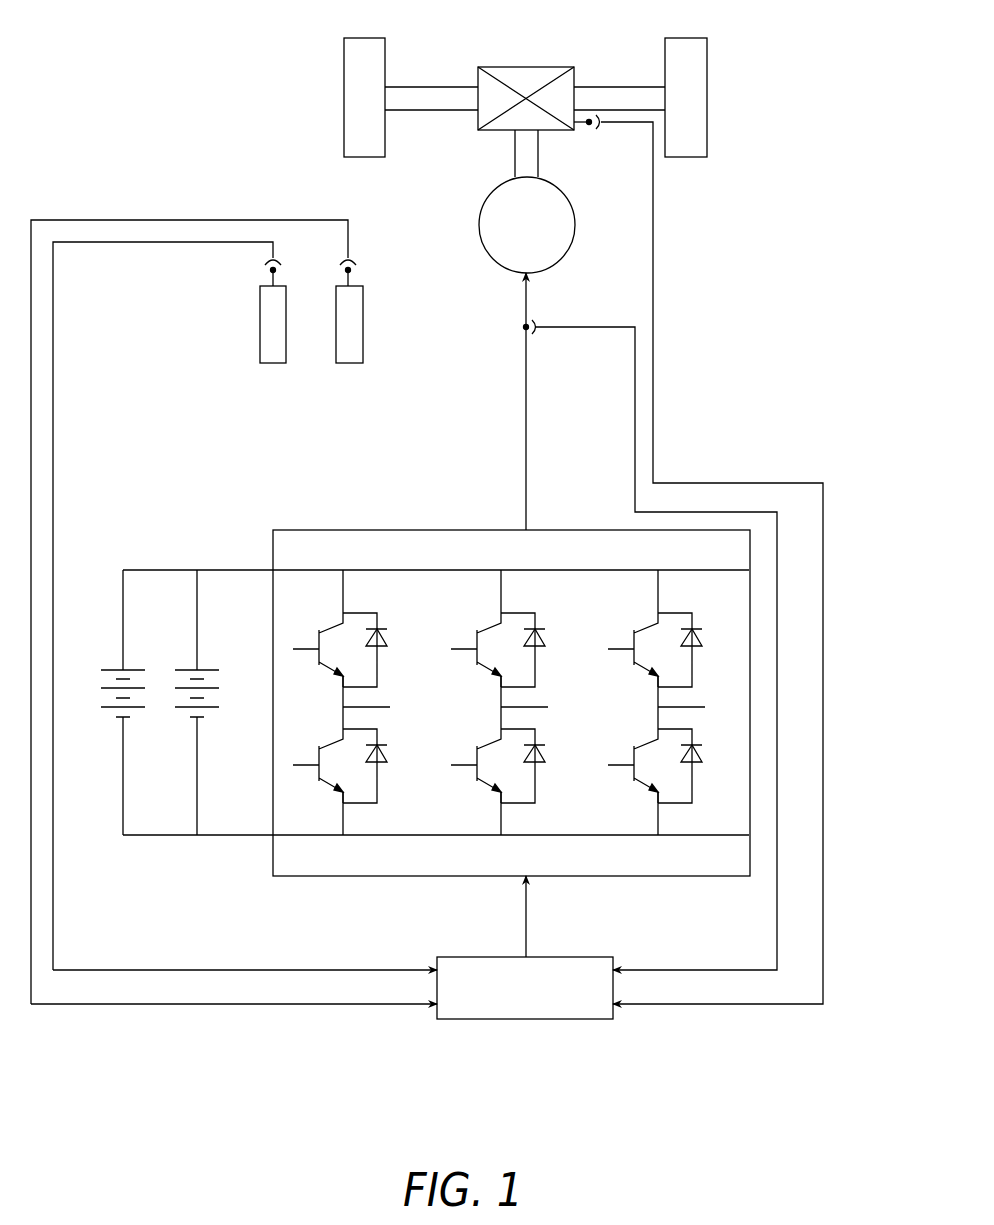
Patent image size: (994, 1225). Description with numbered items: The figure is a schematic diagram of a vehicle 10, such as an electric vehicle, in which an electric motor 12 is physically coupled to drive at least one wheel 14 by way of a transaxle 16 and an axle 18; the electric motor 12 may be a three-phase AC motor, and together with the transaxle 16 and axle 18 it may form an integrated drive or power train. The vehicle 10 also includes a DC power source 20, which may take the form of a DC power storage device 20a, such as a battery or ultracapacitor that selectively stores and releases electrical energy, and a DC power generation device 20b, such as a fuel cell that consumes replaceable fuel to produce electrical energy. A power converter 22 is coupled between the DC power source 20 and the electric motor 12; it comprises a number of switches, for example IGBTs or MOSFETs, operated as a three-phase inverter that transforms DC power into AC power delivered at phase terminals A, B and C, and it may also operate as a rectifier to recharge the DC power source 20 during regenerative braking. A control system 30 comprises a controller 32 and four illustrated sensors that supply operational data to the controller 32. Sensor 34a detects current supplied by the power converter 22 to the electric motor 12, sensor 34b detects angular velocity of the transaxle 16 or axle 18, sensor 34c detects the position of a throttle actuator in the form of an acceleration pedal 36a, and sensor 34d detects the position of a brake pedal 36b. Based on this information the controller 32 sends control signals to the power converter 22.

The vehicle 10 is at (192, 83).
The electric motor 12 is at (478, 208).
The wheel 14 is at (362, 157).
The transaxle 16 is at (520, 62).
The axle 18 is at (430, 112).
The DC power source 20 is at (405, 650).
The DC power storage device 20a is at (182, 668).
The DC power generation device 20b is at (108, 668).
The power converter 22 is at (320, 527).
The control system 30 is at (597, 1001).
The controller 32 is at (433, 956).
The sensor 34a is at (539, 330).
The sensor 34b is at (603, 128).
The sensor 34c is at (355, 262).
The sensor 34d is at (265, 258).
The acceleration pedal 36a is at (363, 323).
The brake pedal 36b is at (287, 323).